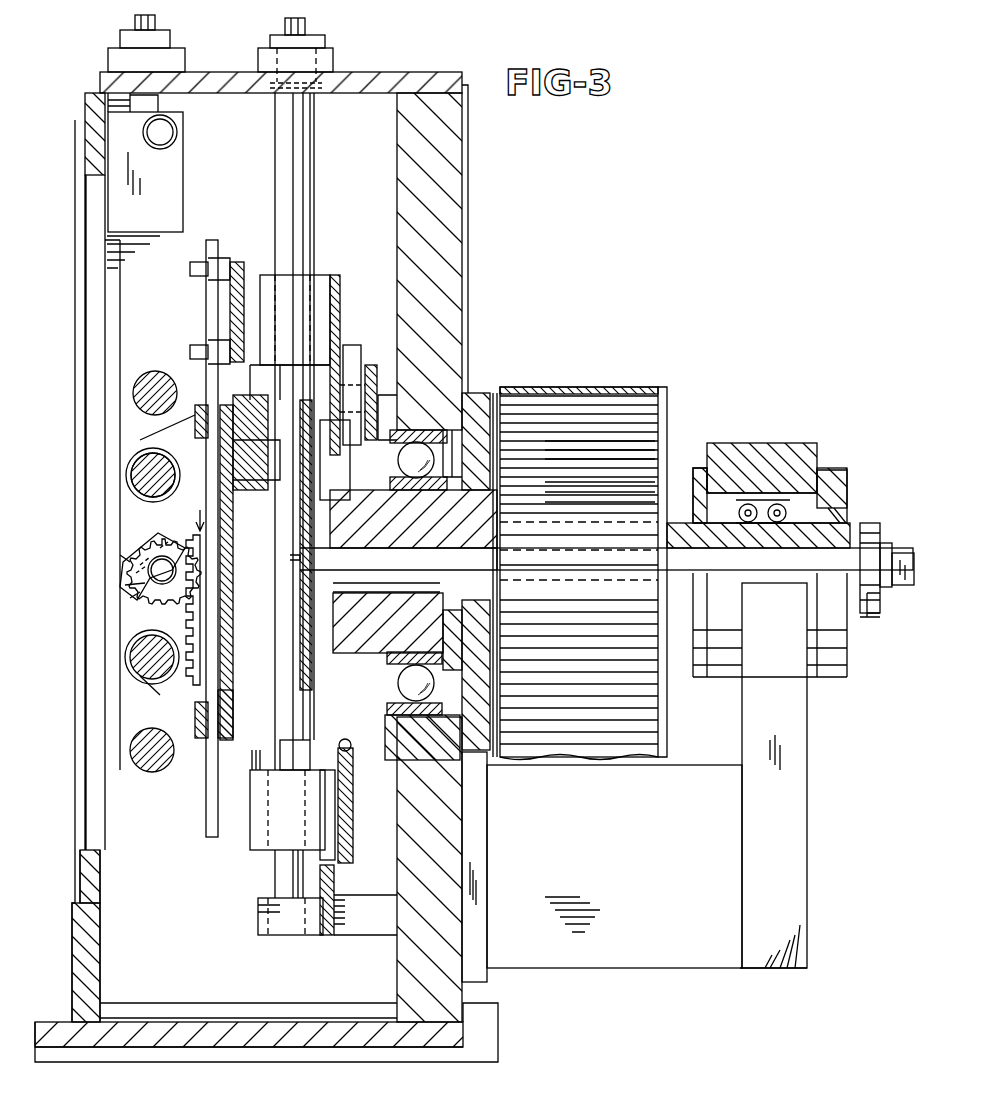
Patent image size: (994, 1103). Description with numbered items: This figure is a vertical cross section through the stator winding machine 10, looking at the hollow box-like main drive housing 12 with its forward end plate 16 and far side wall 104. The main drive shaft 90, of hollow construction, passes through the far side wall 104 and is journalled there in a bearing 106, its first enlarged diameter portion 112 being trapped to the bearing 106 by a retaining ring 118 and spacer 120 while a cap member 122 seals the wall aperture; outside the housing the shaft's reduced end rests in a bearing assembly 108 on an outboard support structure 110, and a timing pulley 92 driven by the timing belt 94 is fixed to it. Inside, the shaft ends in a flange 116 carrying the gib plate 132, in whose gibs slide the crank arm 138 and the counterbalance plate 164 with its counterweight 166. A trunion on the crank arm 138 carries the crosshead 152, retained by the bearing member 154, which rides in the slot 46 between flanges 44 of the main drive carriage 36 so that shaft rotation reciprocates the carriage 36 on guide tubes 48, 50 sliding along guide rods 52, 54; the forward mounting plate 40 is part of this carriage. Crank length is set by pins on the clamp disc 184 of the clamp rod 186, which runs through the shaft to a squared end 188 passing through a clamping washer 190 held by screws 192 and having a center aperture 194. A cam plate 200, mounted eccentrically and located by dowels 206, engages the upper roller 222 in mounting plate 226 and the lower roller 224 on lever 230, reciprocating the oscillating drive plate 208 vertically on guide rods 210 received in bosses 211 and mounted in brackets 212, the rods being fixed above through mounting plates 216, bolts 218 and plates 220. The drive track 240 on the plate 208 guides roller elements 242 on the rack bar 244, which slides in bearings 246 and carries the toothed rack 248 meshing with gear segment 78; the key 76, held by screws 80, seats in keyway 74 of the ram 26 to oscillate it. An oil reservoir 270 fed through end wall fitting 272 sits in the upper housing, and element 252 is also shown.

The stator winding machine 10 is at (213, 68).
The main drive housing 12 is at (470, 262).
The forward end plate 16 is at (368, 95).
The ram 26 is at (160, 587).
The main drive carriage 36 is at (125, 505).
The forward mounting plate 40 is at (157, 440).
The elongate flanges 44 is at (262, 742).
The vertically extending slot 46 is at (255, 560).
The upper guide tube 48 is at (130, 483).
The lower guide tube 50 is at (128, 657).
The upper guide rod 52 is at (146, 468).
The lower guide rod 54 is at (152, 683).
The keyway 74 is at (150, 560).
The key 76 is at (140, 575).
The gear segment 78 is at (130, 592).
The screws 80 is at (125, 560).
The main drive shaft 90 is at (478, 596).
The timing pulley 92 is at (598, 400).
The timing belt 94 is at (565, 387).
The far side wall 104 is at (460, 292).
The bearing 106 is at (443, 443).
The bearing assembly 108 is at (760, 443).
The outboard support structure 110 is at (800, 875).
The first enlarged diameter portion 112 is at (447, 480).
The flange 116 is at (372, 420).
The retaining ring 118 is at (445, 590).
The spacer 120 is at (364, 460).
The cap member 122 is at (478, 392).
The gib plate 132 is at (290, 366).
The crank arm 138 is at (365, 558).
The slider or crosshead 152 is at (268, 410).
The bearing member 154 is at (232, 460).
The counterbalance plate 164 is at (292, 770).
The counterweight 166 is at (255, 765).
The clamp disc 184 is at (327, 555).
The clamp rod 186 is at (782, 585).
The squared end 188 is at (903, 585).
The clamping washer 190 is at (868, 617).
The screws 192 is at (870, 527).
The center aperture 194 is at (886, 545).
The cam plate 200 is at (352, 440).
The dowels 206 is at (348, 660).
The oscillating drive plate 208 is at (338, 270).
The vertical guide rods 210 is at (305, 152).
The bosses or ears 211 is at (322, 272).
The brackets 212 is at (258, 922).
The mounting plates 216 is at (312, 40).
The bolts 218 is at (283, 25).
The plates 220 is at (333, 58).
The upper roller 222 is at (350, 345).
The lower roller 224 is at (358, 900).
The mounting plate 226 is at (373, 368).
The lever 230 is at (345, 870).
The oscillating drive track 240 is at (240, 312).
The roller elements 242 is at (260, 295).
The rack bar 244 is at (215, 248).
The bearings 246 is at (205, 410).
The toothed rack 248 is at (195, 705).
The shaft 252 is at (150, 375).
The oil reservoir 270 is at (180, 183).
The end wall fitting 272 is at (180, 138).